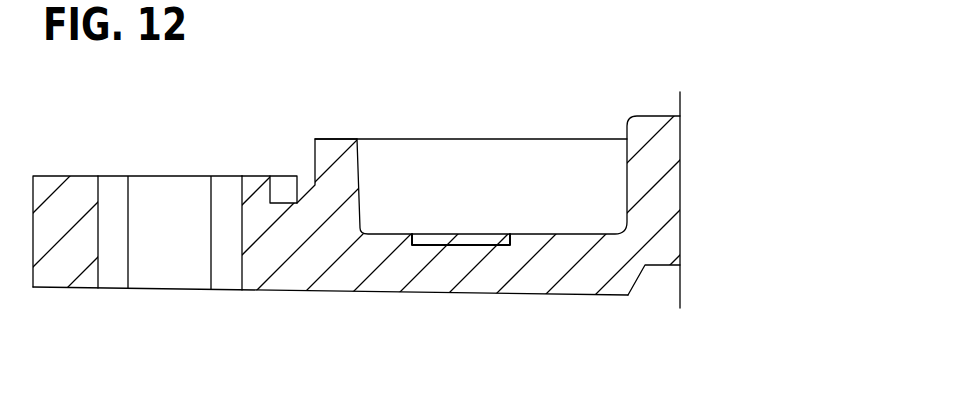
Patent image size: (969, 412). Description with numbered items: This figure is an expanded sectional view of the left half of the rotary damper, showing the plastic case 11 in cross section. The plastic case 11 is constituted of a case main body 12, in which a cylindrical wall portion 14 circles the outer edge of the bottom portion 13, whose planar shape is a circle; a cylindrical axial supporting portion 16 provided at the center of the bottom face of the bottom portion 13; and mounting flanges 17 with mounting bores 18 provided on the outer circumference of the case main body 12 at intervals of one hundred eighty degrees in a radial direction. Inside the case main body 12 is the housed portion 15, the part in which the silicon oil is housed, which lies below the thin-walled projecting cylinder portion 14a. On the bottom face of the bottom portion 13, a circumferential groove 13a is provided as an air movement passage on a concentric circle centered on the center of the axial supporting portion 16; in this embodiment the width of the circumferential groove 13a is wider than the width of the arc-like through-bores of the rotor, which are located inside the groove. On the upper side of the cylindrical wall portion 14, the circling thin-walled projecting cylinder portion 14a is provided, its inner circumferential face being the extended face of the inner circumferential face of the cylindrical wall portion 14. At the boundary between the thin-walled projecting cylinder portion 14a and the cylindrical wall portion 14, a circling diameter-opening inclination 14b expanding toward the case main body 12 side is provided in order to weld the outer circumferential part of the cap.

The plastic case 11 is at (275, 301).
The case main body 12 is at (393, 297).
The bottom portion 13 is at (547, 275).
The circumferential groove 13a is at (457, 246).
The cylindrical wall portion 14 is at (313, 223).
The thin-walled projecting cylinder portion 14a is at (338, 150).
The diameter-opening inclination 14b is at (305, 188).
The housed portion 15 is at (498, 175).
The axial supporting portion 16 is at (653, 128).
The mounting flange 17 is at (65, 267).
The mounting bore 18 is at (188, 267).